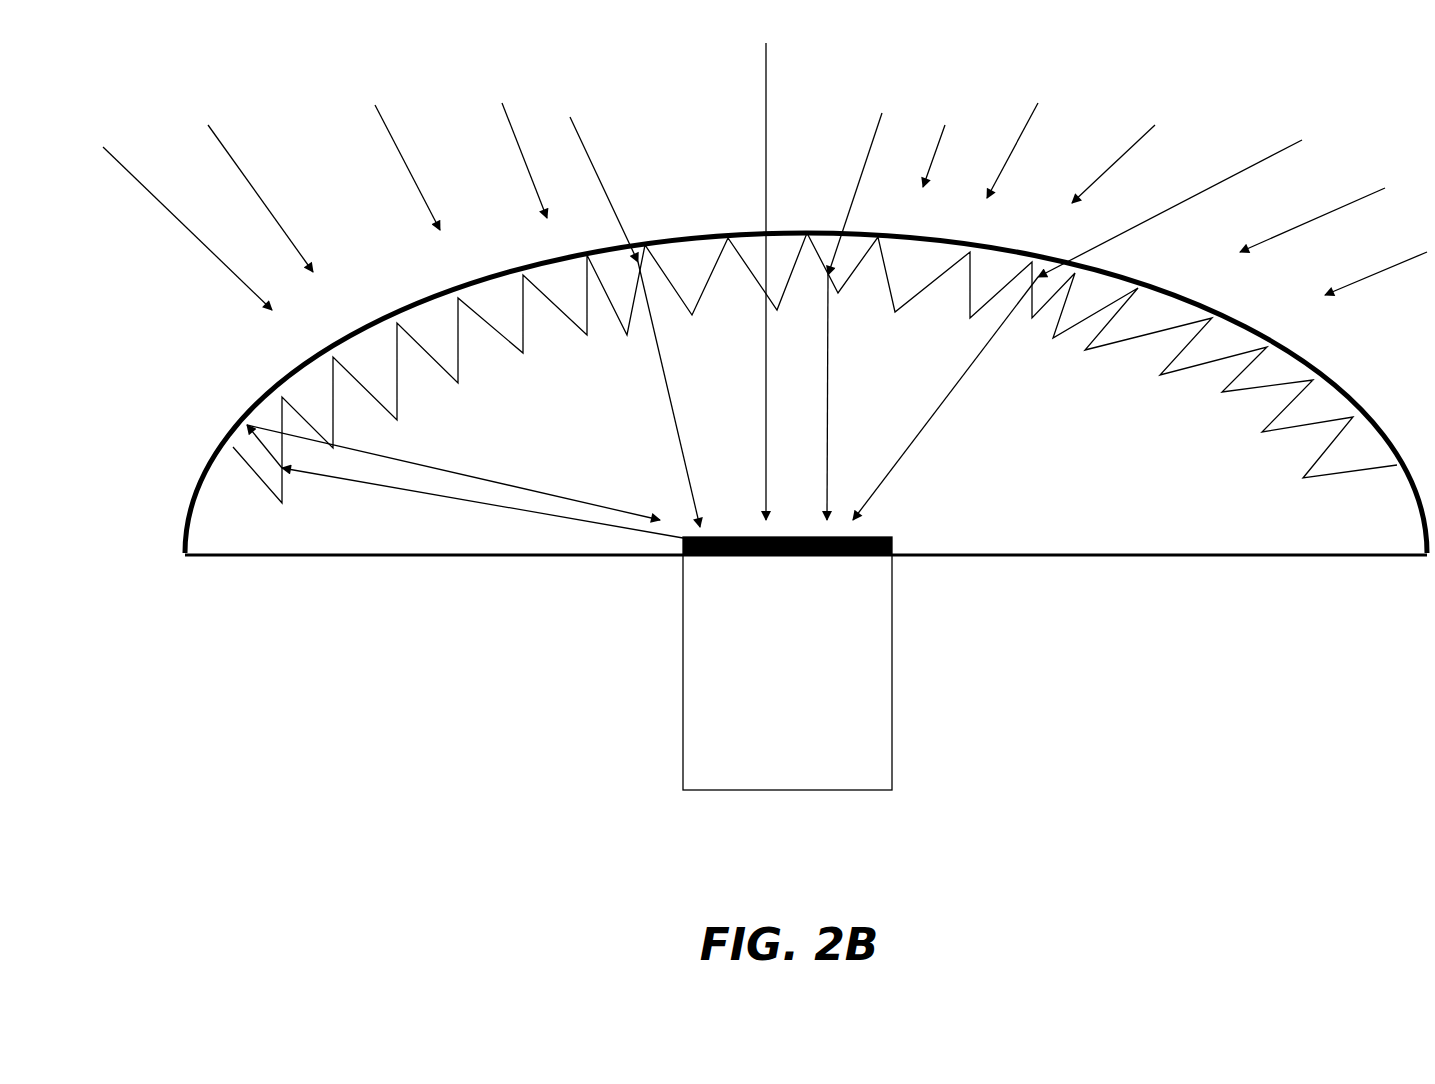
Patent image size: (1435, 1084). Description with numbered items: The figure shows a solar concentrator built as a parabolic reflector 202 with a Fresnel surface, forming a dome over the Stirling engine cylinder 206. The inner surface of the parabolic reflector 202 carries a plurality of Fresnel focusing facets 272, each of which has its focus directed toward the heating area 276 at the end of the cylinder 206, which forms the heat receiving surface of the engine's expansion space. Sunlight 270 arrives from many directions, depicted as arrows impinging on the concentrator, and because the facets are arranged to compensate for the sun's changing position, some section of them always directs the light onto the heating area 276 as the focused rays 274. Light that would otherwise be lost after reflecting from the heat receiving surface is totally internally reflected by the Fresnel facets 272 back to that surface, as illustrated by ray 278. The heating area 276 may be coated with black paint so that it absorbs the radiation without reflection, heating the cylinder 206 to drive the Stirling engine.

The parabolic reflector 202 is at (230, 413).
The cylinder 206 is at (787, 672).
The sunlight 270 is at (405, 160).
The Fresnel focusing facets 272 is at (523, 367).
The focused rays 274 is at (973, 382).
The heating area 276 is at (887, 537).
The ray 278 is at (322, 477).